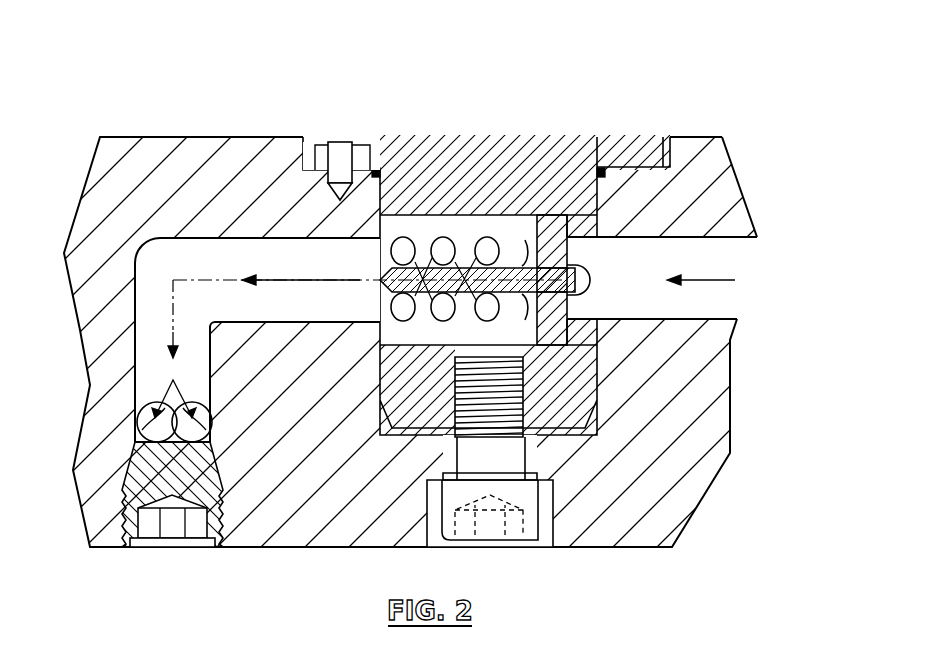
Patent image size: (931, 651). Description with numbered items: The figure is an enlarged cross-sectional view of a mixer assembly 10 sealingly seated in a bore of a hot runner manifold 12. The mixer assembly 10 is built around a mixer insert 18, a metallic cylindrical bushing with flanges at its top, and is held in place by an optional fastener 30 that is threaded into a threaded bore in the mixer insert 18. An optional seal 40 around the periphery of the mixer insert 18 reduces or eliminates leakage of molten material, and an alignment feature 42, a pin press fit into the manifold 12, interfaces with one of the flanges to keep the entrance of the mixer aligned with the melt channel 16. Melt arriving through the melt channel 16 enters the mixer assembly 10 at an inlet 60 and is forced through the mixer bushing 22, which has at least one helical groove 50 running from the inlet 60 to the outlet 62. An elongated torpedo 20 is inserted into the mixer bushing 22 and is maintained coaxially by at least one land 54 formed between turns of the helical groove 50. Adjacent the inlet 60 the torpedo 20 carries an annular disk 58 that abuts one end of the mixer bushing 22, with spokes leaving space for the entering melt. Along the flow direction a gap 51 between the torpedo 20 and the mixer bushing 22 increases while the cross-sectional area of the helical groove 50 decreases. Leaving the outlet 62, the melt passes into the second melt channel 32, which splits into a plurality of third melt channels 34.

The mixer assembly 10 is at (578, 56).
The hot runner manifold 12 is at (724, 178).
The melt channel 16 is at (641, 310).
The mixer insert 18 is at (600, 162).
The elongated torpedo 20 is at (576, 278).
The mixer bushing 22 is at (398, 213).
The fastener 30 is at (537, 525).
The second melt channel 32 is at (206, 373).
The third melt channel 34 is at (145, 424).
The seal 40 is at (605, 170).
The alignment feature 42 is at (340, 160).
The helical groove 50 is at (478, 245).
The gap 51 is at (380, 284).
The land 54 is at (518, 235).
The annular disk 58 is at (545, 225).
The inlet 60 is at (757, 235).
The outlet 62 is at (380, 250).